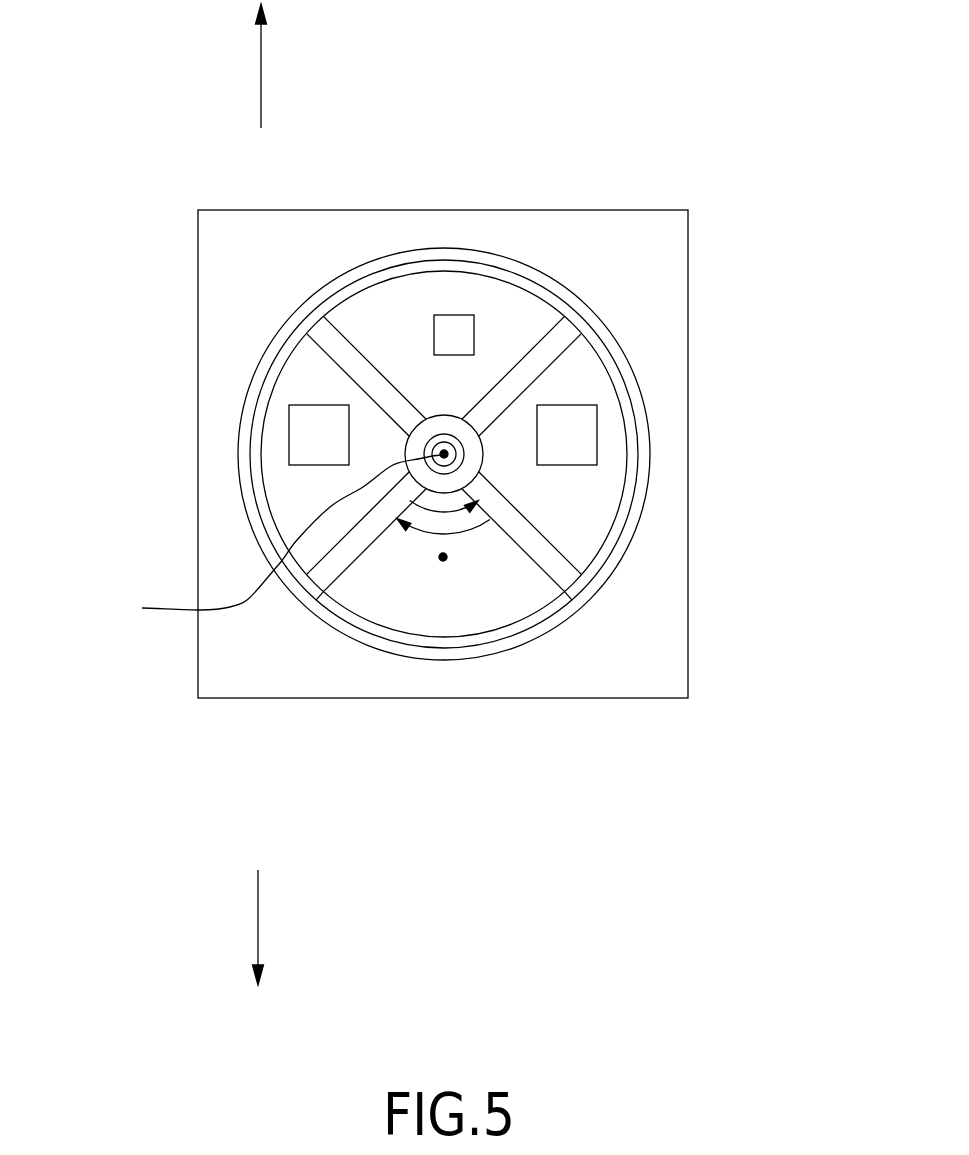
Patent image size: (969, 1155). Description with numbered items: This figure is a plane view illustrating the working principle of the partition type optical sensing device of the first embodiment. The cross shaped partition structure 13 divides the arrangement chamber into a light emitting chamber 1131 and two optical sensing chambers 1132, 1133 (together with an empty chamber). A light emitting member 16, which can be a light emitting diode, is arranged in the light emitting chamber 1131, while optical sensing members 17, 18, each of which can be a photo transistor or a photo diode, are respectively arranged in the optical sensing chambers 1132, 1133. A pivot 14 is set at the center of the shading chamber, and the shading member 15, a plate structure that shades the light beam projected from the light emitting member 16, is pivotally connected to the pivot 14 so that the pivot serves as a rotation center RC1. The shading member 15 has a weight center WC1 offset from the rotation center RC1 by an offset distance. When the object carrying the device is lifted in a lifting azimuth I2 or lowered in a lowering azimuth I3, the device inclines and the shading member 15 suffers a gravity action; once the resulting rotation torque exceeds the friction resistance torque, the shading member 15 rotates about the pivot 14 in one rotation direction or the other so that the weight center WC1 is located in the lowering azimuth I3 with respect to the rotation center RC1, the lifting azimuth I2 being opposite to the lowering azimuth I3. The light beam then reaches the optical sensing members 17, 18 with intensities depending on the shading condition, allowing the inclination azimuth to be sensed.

The partition structure 13 is at (565, 335).
The pivot 14 is at (748, 612).
The shading member 15 is at (352, 600).
The light emitting member 16 is at (452, 327).
The optical sensing member 17 is at (560, 429).
The optical sensing member 18 is at (317, 433).
The light emitting chamber 1131 is at (372, 308).
The optical sensing chamber 1132 is at (595, 496).
The optical sensing chamber 1133 is at (292, 497).
The rotation center RC1 is at (264, 541).
The weight center WC1 is at (443, 557).
The lifting azimuth I2 is at (278, 66).
The lowering azimuth I3 is at (276, 927).